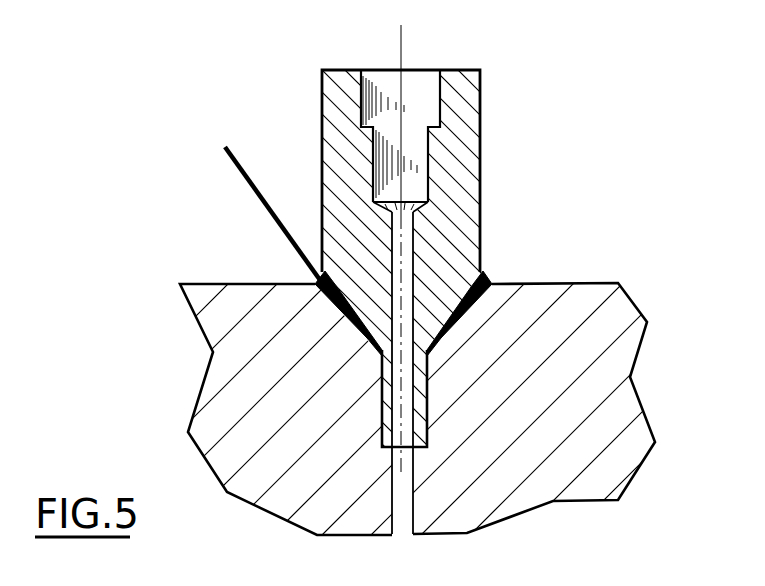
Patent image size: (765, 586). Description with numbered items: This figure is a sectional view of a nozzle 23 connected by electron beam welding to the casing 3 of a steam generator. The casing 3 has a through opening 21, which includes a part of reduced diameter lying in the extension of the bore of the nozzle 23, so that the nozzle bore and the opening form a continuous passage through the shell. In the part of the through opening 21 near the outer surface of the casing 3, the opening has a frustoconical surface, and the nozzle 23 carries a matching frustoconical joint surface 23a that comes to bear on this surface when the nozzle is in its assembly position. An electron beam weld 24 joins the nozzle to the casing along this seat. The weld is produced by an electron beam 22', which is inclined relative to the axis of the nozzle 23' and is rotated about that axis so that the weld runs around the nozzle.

The casing 3 is at (610, 337).
The through opening 21 is at (400, 495).
The electron beam 22' is at (237, 217).
The nozzle 23 is at (440, 293).
The axis of the nozzle 23' is at (450, 242).
The frustoconical joint surface 23a is at (447, 322).
The electron beam weld 24 is at (488, 282).